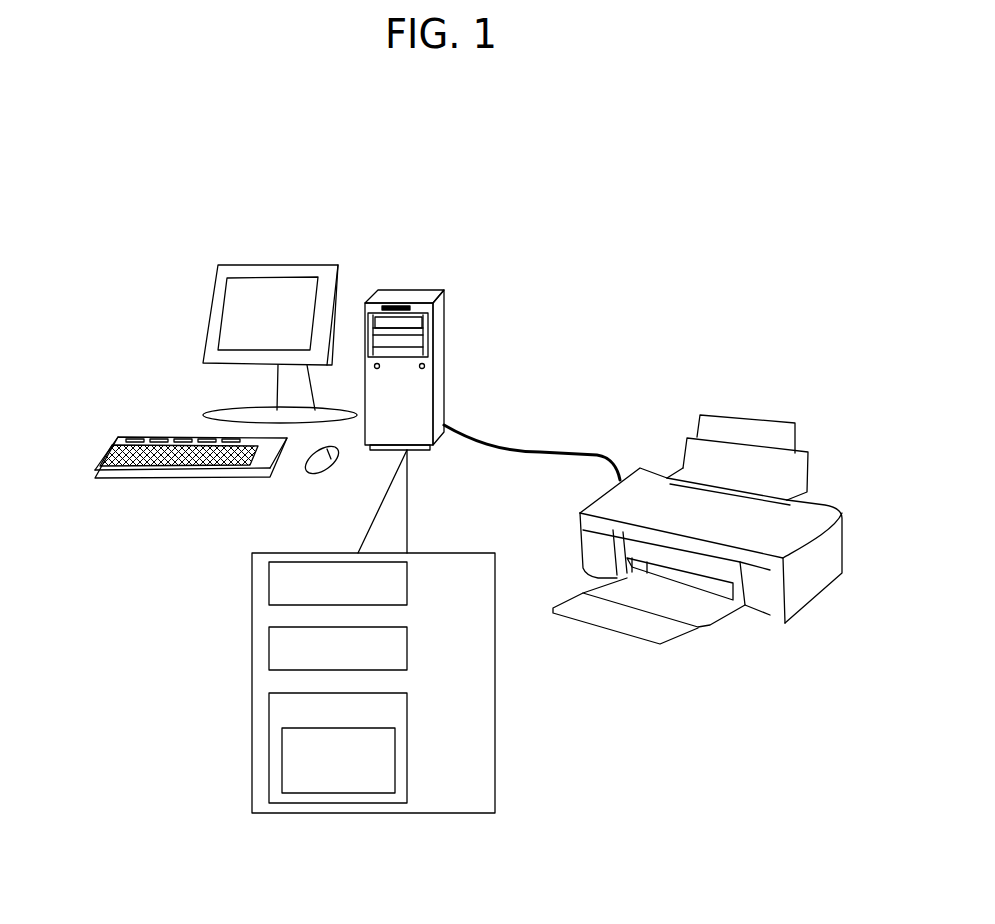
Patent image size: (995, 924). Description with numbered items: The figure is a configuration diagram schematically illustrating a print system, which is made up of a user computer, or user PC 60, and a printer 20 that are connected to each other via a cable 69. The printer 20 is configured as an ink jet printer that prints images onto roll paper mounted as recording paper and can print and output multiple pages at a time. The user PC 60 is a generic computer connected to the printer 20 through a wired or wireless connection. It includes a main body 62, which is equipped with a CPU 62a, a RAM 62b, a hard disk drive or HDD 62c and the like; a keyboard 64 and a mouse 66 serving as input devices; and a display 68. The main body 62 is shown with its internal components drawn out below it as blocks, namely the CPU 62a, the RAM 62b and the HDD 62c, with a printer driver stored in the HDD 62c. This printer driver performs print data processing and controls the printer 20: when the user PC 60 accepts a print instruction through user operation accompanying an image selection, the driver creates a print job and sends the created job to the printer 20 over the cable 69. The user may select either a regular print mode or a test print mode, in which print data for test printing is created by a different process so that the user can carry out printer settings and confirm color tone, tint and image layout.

The printer 20 is at (781, 381).
The user computer 60 is at (442, 214).
The main body 62 is at (440, 353).
The CPU 62a is at (408, 583).
The RAM 62b is at (408, 646).
The hard disk drive (HDD) 62c is at (408, 746).
The keyboard 64 is at (118, 438).
The mouse 66 is at (308, 474).
The display 68 is at (222, 308).
The cable 69 is at (543, 452).